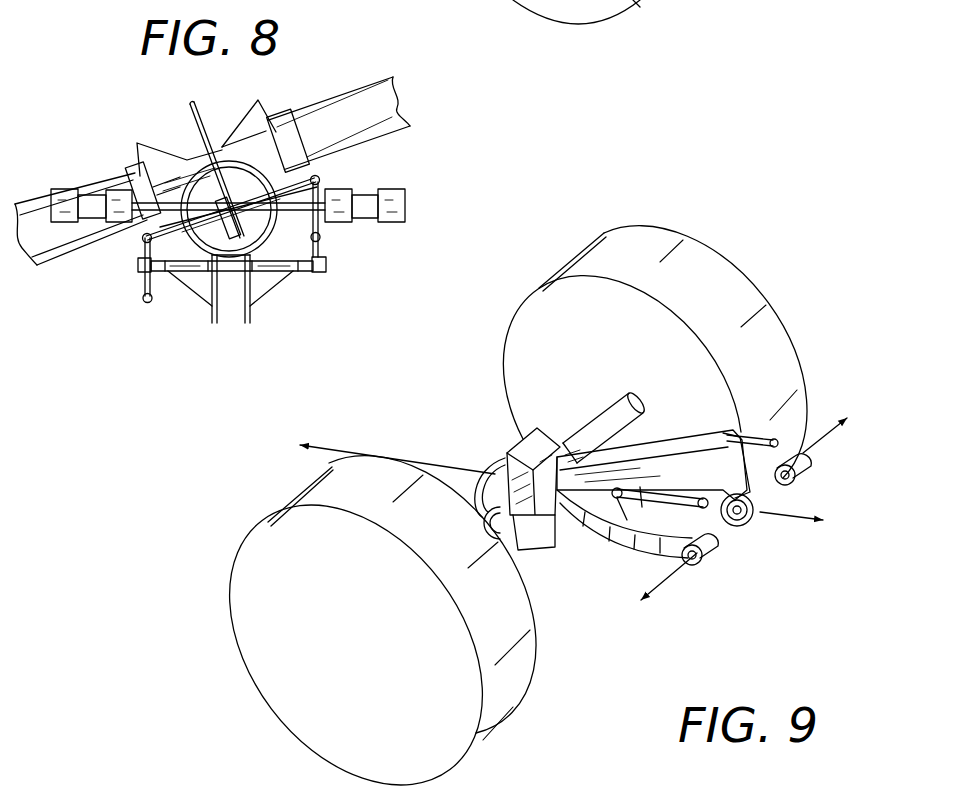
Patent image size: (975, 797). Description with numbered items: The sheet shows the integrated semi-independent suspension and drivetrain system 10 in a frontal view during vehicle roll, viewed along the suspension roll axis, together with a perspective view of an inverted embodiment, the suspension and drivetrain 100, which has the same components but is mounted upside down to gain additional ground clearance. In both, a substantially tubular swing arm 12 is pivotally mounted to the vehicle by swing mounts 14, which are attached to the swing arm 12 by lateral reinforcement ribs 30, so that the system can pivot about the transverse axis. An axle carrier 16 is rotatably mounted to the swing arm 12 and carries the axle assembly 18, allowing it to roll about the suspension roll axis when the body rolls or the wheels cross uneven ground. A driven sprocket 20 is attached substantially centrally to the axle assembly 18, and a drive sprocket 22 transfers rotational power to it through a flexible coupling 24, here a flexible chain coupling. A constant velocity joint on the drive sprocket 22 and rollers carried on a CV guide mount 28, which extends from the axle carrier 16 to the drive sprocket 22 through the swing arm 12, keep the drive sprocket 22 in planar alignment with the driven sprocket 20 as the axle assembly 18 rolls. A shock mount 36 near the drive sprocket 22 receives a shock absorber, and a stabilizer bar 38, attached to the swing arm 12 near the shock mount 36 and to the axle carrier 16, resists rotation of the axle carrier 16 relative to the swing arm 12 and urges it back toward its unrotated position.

In FIG. 8, the integrated semi-independent suspension and drivetrain system 10 is at (303, 95).
In FIG. 8, the swing arm 12 is at (283, 275).
In FIG. 9, the swing arm 12 is at (598, 482).
In FIG. 8, the swing mounts 14 is at (62, 192).
In FIG. 9, the swing mounts 14 is at (706, 560).
In FIG. 8, the axle carrier 16 is at (250, 132).
In FIG. 9, the axle carrier 16 is at (505, 452).
In FIG. 8, the axle assembly 18 is at (352, 102).
In FIG. 9, the axle assembly 18 is at (600, 416).
In FIG. 8, the driven sprocket 20 is at (188, 114).
In FIG. 9, the driven sprocket 20 is at (540, 543).
In FIG. 8, the drive sprocket 22 is at (228, 224).
In FIG. 9, the flexible coupling 24 is at (564, 552).
In FIG. 8, the CV guide mount 28 is at (262, 236).
In FIG. 8, the lateral reinforcement ribs 30 is at (145, 212).
In FIG. 8, the shock mount 36 is at (247, 323).
In FIG. 9, the shock mount 36 is at (742, 426).
In FIG. 8, the stabilizer bar 38 is at (138, 288).
In FIG. 9, the stabilizer bar 38 is at (663, 487).
In FIG. 9, the integrated semi-independent suspension and drivetrain 100 is at (463, 378).